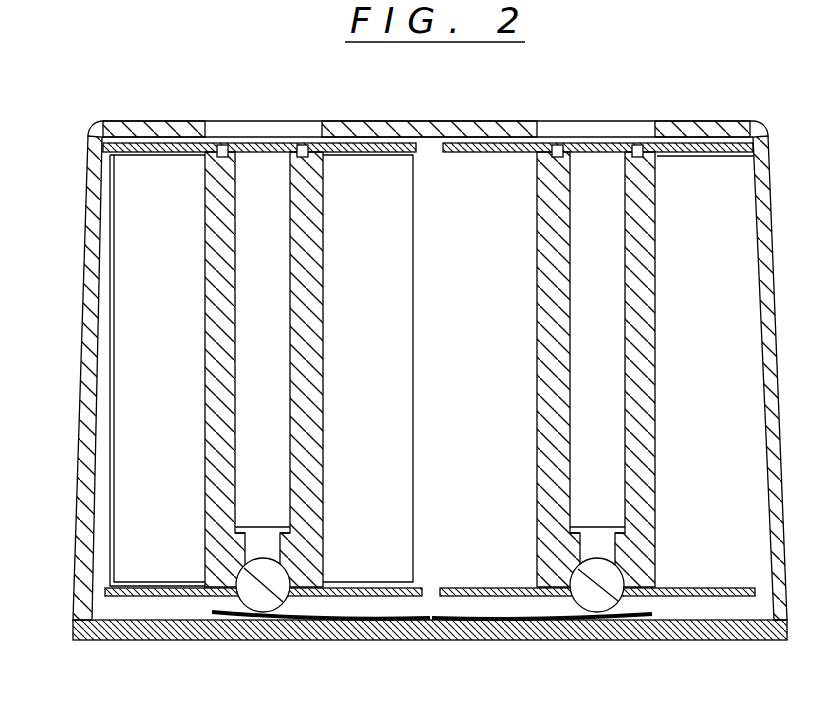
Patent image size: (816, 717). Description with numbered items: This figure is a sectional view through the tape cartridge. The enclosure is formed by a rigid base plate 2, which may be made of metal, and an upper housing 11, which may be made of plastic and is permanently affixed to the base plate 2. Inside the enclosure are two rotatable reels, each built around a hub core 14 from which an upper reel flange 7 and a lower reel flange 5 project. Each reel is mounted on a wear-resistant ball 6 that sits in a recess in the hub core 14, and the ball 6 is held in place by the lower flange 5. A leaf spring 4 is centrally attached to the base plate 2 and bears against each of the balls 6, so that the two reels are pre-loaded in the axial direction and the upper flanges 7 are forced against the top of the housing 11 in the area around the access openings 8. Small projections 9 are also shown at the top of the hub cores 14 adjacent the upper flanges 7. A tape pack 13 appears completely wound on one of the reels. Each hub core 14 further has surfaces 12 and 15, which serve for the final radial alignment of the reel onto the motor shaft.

The base plate 2 is at (100, 632).
The leaf spring 4 is at (370, 617).
The lower reel flange 5 is at (142, 596).
The ball 6 is at (263, 593).
The upper reel flange 7 is at (175, 148).
The access openings 8 is at (300, 130).
The projection 9 is at (225, 148).
The housing 11 is at (92, 203).
The surface 12 is at (262, 545).
The tape pack 13 is at (375, 305).
The hub core 14 is at (203, 332).
The surface 15 is at (290, 206).